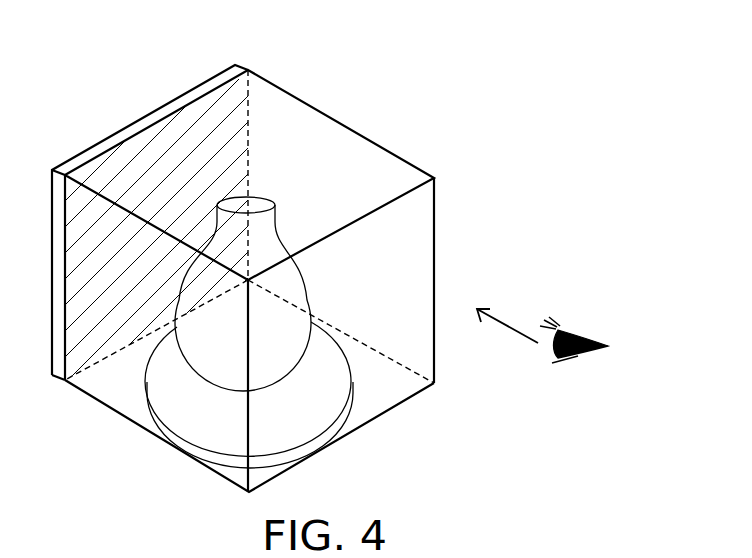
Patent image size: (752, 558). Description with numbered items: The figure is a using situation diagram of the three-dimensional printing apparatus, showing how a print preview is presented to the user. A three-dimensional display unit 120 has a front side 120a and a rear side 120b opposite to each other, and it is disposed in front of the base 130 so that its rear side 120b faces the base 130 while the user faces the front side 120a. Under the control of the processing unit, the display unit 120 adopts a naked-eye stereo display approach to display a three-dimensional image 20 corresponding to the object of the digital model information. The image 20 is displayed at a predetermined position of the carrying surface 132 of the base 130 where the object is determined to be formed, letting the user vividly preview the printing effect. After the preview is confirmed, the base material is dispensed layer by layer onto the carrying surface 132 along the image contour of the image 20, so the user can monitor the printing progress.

The 3-D display unit 120 is at (243, 281).
The front side 120a is at (222, 113).
The rear side 120b is at (203, 80).
The 3-D image 20 is at (309, 290).
The base 130 is at (324, 402).
The carrying surface 132 is at (322, 372).